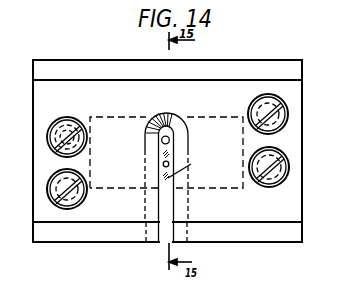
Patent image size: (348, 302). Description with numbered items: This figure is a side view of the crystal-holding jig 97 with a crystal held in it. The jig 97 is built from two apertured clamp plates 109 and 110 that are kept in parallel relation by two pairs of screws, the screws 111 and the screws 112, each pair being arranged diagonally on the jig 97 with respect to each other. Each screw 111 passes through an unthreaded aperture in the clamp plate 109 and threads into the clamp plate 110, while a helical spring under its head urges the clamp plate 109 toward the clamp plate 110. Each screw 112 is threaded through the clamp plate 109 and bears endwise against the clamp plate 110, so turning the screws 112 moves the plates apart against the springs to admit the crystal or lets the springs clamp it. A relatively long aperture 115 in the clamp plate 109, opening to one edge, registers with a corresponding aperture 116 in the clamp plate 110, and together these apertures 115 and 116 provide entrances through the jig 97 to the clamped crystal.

The jig 97 is at (255, 62).
The clamp plate 110 is at (294, 76).
The clamp plate 109 is at (289, 133).
The screw 112 is at (47, 191).
The screw 111 is at (50, 137).
The aperture 115 is at (158, 209).
The aperture 116 is at (146, 226).